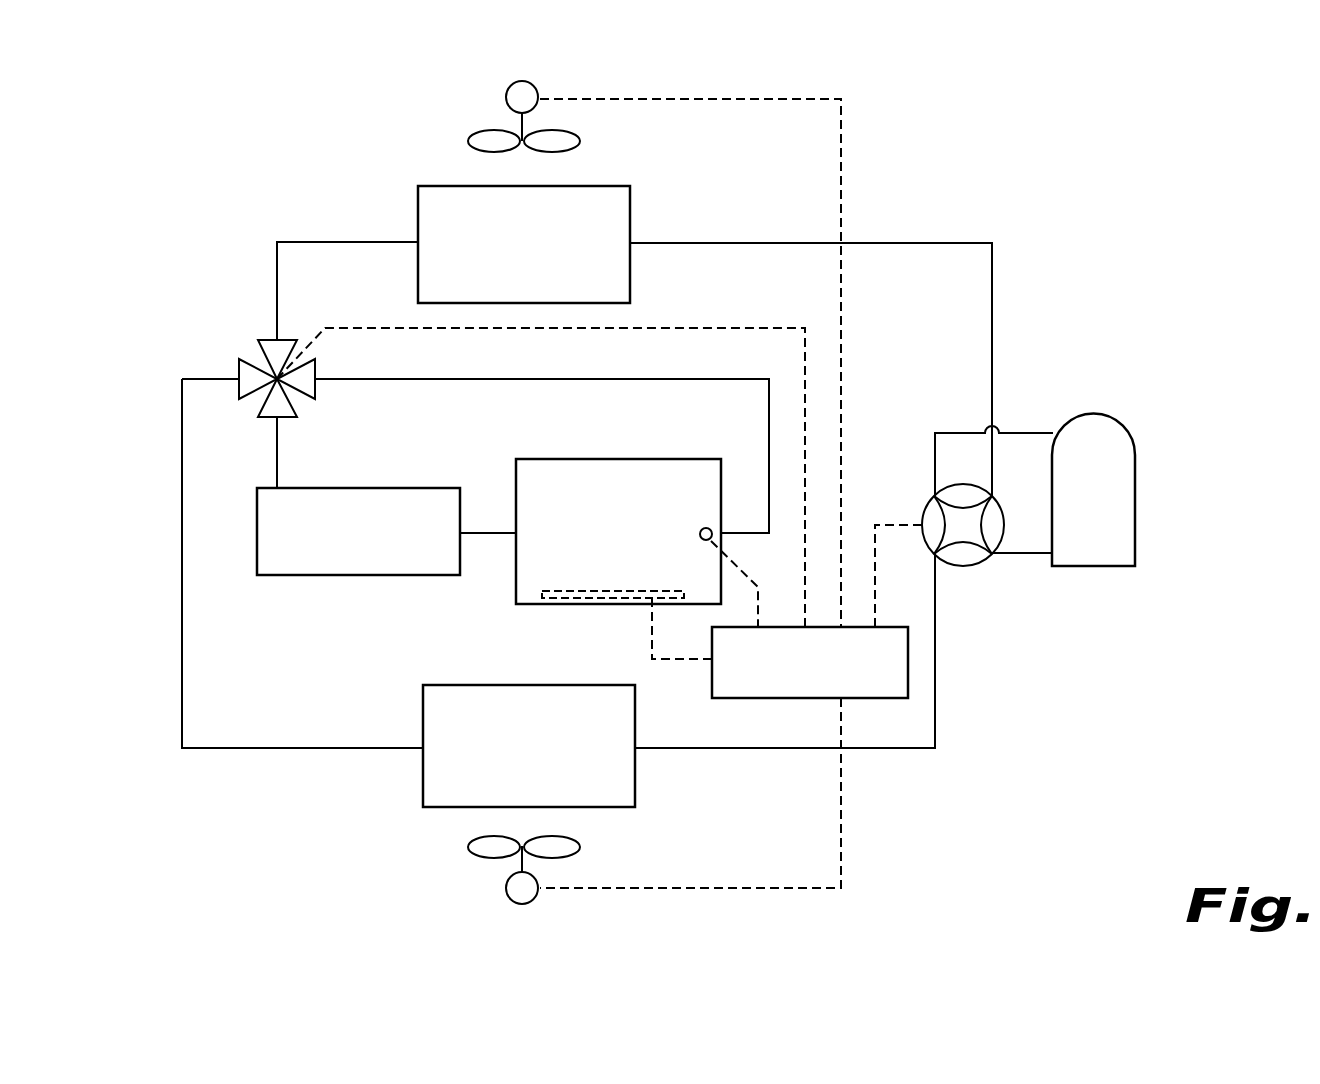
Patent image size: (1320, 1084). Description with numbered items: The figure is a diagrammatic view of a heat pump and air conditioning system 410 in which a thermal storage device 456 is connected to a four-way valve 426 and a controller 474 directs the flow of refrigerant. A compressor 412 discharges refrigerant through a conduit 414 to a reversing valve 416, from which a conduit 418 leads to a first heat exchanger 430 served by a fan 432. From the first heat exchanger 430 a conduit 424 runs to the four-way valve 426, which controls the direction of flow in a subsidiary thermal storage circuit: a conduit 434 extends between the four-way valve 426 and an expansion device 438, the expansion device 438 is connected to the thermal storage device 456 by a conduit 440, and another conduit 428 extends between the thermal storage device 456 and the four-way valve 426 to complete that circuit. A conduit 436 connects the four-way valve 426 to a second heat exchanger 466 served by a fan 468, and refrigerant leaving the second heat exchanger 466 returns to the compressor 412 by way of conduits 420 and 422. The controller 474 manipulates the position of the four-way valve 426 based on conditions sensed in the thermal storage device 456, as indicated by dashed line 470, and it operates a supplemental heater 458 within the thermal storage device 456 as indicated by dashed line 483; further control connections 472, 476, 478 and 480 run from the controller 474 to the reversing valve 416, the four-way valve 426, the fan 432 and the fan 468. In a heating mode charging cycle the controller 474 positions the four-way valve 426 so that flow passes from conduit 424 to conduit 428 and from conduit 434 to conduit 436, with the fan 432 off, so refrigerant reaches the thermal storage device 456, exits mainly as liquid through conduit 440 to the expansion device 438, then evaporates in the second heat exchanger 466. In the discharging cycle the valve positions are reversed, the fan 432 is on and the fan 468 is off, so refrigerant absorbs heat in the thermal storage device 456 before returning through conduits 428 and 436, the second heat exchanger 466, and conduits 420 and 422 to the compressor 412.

The system 410 is at (994, 204).
The compressor 412 is at (1111, 416).
The conduit 414 is at (1041, 433).
The reversing valve 416 is at (955, 577).
The conduit 418 is at (992, 270).
The conduit 420 is at (935, 708).
The conduit 422 is at (1021, 553).
The conduit 424 is at (341, 242).
The four-way valve 426 is at (253, 357).
The conduit 428 is at (653, 380).
The first heat exchanger 430 is at (631, 187).
The fan 432 is at (506, 119).
The conduit 434 is at (277, 466).
The conduit 436 is at (182, 414).
The expansion device 438 is at (295, 576).
The conduit 440 is at (489, 534).
The thermal storage device 456 is at (576, 459).
The supplemental heater 458 is at (550, 591).
The second heat exchanger 466 is at (635, 770).
The fan 468 is at (504, 870).
The dashed line 470 is at (750, 580).
The control line 472 is at (875, 525).
The controller 474 is at (763, 698).
The control line 476 is at (680, 328).
The control line 478 is at (760, 100).
The control line 480 is at (841, 820).
The dashed line 483 is at (652, 624).